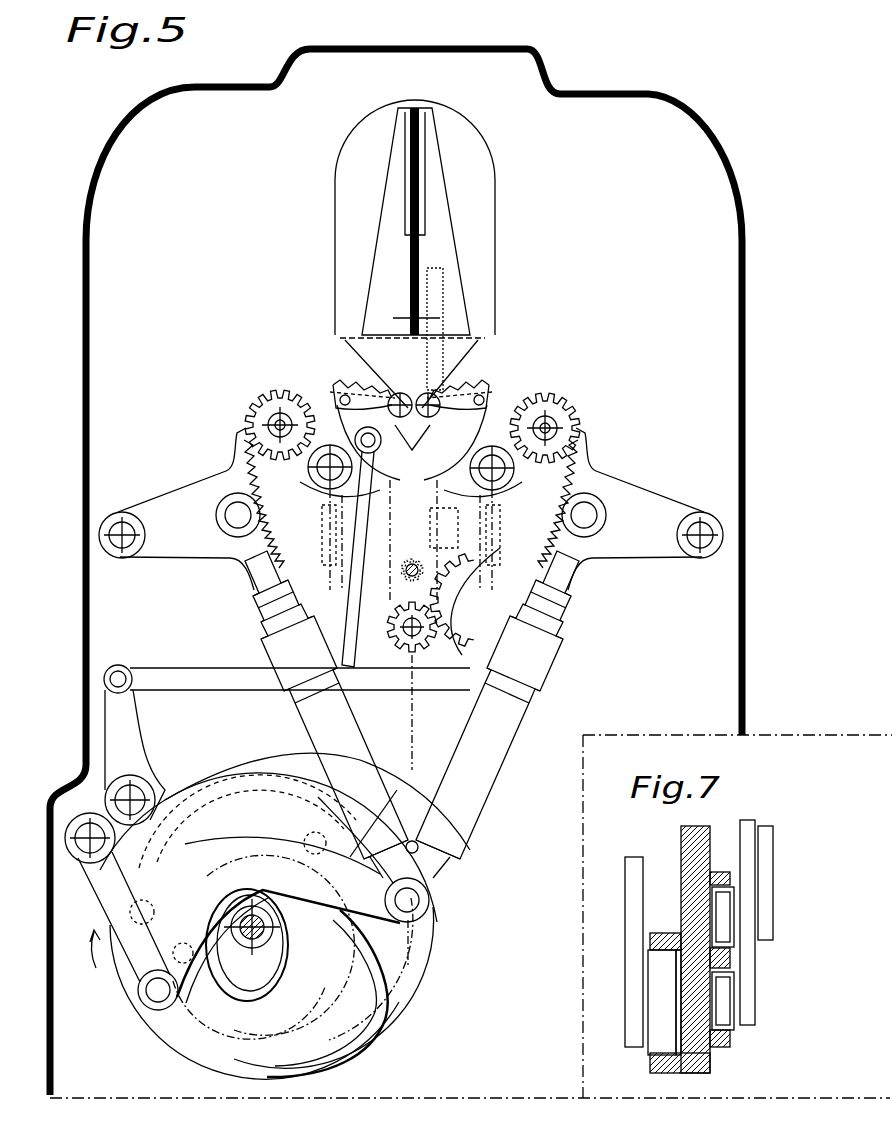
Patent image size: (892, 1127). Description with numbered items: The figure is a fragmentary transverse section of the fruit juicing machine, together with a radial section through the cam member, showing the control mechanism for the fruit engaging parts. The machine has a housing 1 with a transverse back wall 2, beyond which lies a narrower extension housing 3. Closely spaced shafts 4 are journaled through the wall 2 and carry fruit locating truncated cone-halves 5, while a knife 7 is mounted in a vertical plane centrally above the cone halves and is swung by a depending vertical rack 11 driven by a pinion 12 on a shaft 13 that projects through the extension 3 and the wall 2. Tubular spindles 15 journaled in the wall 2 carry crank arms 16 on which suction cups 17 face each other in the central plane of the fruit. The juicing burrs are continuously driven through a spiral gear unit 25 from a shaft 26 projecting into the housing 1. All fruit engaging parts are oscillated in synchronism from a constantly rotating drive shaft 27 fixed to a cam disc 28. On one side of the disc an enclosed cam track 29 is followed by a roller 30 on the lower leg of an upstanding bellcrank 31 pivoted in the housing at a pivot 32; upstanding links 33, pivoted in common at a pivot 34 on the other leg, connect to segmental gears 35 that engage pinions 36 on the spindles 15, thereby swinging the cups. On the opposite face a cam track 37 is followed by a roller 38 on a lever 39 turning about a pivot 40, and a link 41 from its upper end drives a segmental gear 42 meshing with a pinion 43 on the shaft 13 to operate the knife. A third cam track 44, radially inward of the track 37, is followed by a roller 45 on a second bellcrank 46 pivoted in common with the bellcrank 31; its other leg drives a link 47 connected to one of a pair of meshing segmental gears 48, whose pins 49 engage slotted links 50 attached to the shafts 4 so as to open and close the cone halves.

In FIG. 5, the housing 1 is at (660, 100).
In FIG. 5, the transverse back wall 2 is at (683, 412).
In FIG. 5, the extension housing 3 is at (386, 507).
In FIG. 5, the shafts 4 is at (445, 398).
In FIG. 5, the truncated cone-halves 5 is at (365, 338).
In FIG. 5, the knife 7 is at (207, 995).
In FIG. 5, the vertical rack 11 is at (447, 280).
In FIG. 5, the pinion 12 is at (400, 650).
In FIG. 5, the shaft 13 is at (420, 650).
In FIG. 5, the tubular spindles 15 is at (552, 428).
In FIG. 5, the crank arms 16 is at (497, 500).
In FIG. 5, the suction cups 17 is at (500, 527).
In FIG. 5, the spiral gear unit 25 is at (440, 510).
In FIG. 5, the shaft 26 is at (404, 578).
In FIG. 5, the drive shaft 27 is at (253, 948).
In FIG. 5, the cam disc 28 is at (340, 1030).
In FIG. 7, the cam disc 28 is at (688, 1060).
In FIG. 5, the cam track 29 is at (212, 1052).
In FIG. 7, the cam track 29 is at (678, 975).
In FIG. 5, the roller 30 is at (157, 1010).
In FIG. 7, the roller 30 is at (665, 1012).
In FIG. 5, the bellcrank 31 is at (388, 797).
In FIG. 7, the bellcrank 31 is at (628, 882).
In FIG. 5, the pivot 32 is at (88, 852).
In FIG. 5, the links 33 is at (498, 762).
In FIG. 5, the common pivot 34 is at (430, 900).
In FIG. 5, the segmental gears 35 is at (598, 442).
In FIG. 5, the pinions 36 is at (555, 415).
In FIG. 5, the cam track 37 is at (410, 962).
In FIG. 7, the cam track 37 is at (714, 985).
In FIG. 5, the roller 38 is at (108, 915).
In FIG. 7, the roller 38 is at (724, 1008).
In FIG. 5, the lever 39 is at (125, 742).
In FIG. 7, the lever 39 is at (750, 872).
In FIG. 5, the pivot 40 is at (136, 797).
In FIG. 5, the link 41 is at (176, 668).
In FIG. 5, the segmental gear 42 is at (468, 580).
In FIG. 5, the pinion 43 is at (391, 624).
In FIG. 5, the cam track 44 is at (350, 877).
In FIG. 7, the cam track 44 is at (714, 905).
In FIG. 5, the roller 45 is at (243, 900).
In FIG. 7, the roller 45 is at (724, 925).
In FIG. 5, the bellcrank 46 is at (208, 790).
In FIG. 7, the bellcrank 46 is at (772, 848).
In FIG. 5, the link 47 is at (346, 597).
In FIG. 5, the segmental gears 48 is at (432, 437).
In FIG. 5, the pins 49 is at (470, 398).
In FIG. 5, the slotted links 50 is at (440, 400).